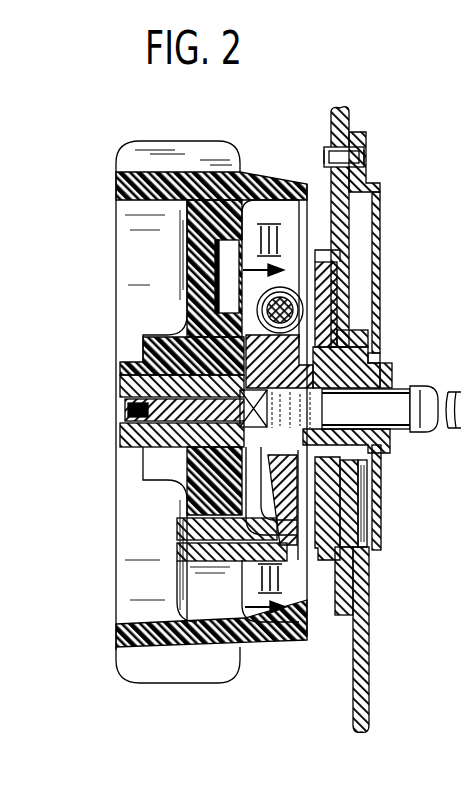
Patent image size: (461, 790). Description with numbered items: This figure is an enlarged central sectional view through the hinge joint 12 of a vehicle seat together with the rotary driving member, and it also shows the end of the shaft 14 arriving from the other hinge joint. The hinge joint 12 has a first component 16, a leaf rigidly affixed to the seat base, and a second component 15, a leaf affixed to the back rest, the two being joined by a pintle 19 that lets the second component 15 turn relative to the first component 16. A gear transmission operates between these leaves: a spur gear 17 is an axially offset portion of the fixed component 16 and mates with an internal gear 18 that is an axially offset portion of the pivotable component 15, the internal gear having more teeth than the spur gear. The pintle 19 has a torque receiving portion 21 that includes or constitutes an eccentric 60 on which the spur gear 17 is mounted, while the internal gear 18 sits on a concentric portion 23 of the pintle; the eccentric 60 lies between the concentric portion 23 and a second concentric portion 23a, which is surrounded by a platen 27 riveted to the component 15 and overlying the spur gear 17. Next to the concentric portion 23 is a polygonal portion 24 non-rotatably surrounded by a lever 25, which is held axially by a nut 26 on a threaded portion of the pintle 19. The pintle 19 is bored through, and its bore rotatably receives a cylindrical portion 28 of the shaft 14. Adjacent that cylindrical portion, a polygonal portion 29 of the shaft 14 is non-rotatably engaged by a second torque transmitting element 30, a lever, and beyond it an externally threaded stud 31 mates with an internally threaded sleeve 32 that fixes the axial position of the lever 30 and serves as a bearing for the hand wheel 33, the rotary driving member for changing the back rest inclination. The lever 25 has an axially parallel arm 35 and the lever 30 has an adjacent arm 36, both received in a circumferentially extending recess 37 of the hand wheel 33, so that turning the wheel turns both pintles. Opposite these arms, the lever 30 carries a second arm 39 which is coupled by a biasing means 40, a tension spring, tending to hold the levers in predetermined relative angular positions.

The hinge joint 12 is at (381, 350).
The shaft 14 is at (437, 428).
The second component 15 is at (340, 124).
The first component 16 is at (363, 664).
The spur gear 17 is at (337, 298).
The internal gear 18 is at (342, 572).
The pintle 19 is at (393, 437).
The torque receiving portion 21 is at (380, 330).
The concentric portion 23 is at (360, 480).
The second concentric portion 23a is at (393, 380).
The polygonal portion 24 is at (362, 460).
The lever 25 is at (360, 520).
The nut 26 is at (246, 353).
The platen 27 is at (380, 236).
The cylindrical portion 28 is at (205, 486).
The polygonal portion 29 is at (238, 455).
The second torque transmitting element 30 is at (200, 355).
The stud 31 is at (143, 402).
The sleeve 32 is at (125, 435).
The hand wheel 33 is at (218, 153).
The arm 35 is at (177, 552).
The arm 36 is at (177, 526).
The recess 37 is at (180, 564).
The second arm 39 is at (300, 302).
The biasing means 40 is at (245, 283).
The eccentric 60 is at (372, 360).